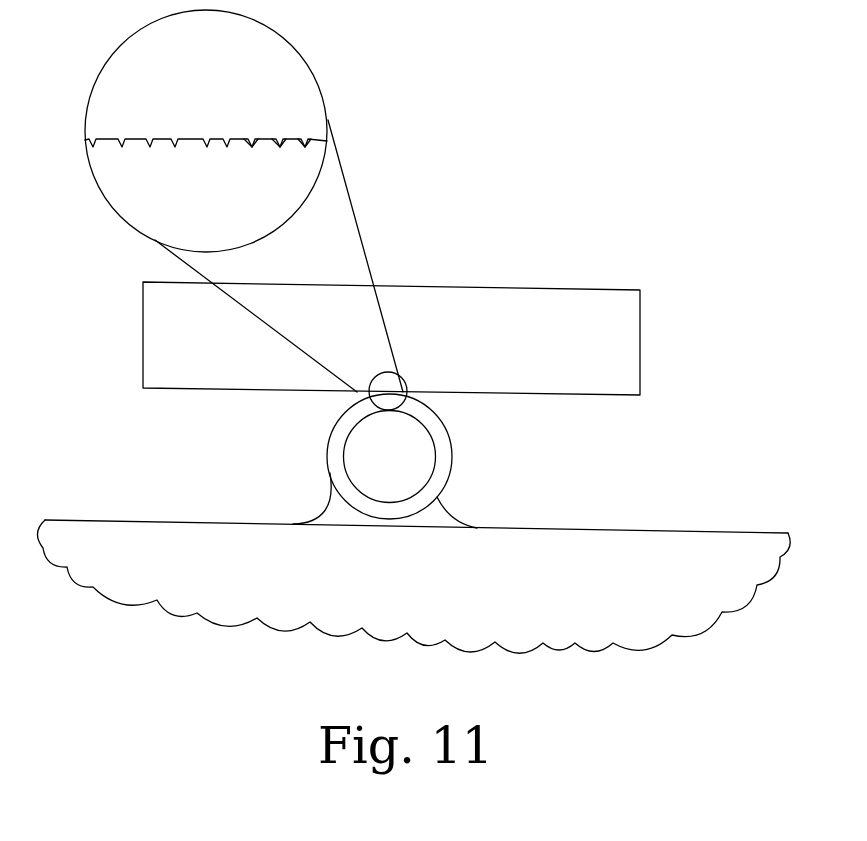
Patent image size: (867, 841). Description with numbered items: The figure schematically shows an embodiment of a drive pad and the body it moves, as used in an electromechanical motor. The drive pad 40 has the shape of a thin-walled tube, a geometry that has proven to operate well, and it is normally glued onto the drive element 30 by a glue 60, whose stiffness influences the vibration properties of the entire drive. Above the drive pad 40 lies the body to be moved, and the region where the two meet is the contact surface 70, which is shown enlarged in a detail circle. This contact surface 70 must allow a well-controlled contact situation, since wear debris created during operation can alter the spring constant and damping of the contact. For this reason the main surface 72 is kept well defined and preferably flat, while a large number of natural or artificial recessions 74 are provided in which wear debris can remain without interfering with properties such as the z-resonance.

The drive element 30 is at (700, 533).
The drive pad 40 is at (332, 435).
The glue 60 is at (460, 520).
The contact surface 70 is at (115, 185).
The main surface 72 is at (192, 133).
The recessions 74 is at (278, 142).